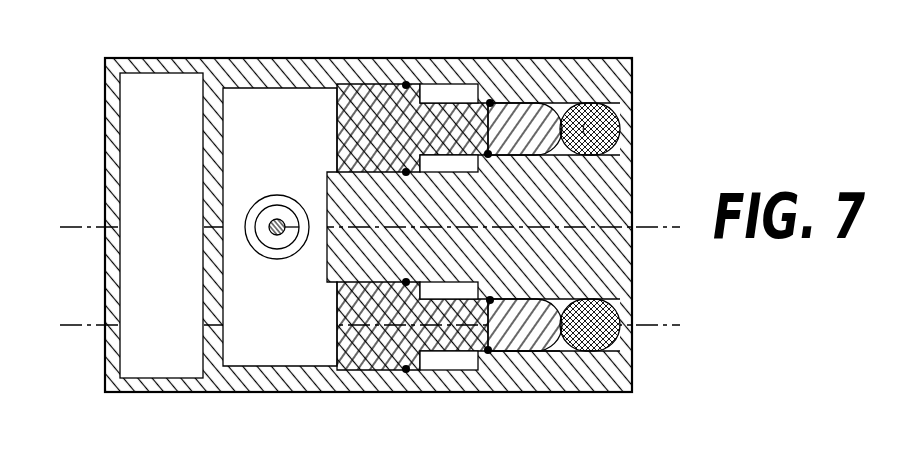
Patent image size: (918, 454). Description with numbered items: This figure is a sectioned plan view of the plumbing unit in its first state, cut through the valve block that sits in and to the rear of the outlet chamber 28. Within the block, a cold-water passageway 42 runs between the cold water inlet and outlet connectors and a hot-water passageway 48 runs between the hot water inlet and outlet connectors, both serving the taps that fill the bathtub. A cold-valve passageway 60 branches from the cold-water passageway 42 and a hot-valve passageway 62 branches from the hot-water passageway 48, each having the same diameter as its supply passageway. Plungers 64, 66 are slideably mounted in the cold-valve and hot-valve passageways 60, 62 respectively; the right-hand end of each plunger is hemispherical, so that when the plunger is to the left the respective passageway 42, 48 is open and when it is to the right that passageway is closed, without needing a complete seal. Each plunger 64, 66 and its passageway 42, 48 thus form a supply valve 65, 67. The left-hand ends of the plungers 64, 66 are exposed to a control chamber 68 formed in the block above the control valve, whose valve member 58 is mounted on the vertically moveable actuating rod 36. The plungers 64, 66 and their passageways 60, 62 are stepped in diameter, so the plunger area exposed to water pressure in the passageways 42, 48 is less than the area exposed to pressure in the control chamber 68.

The outlet chamber 28 is at (137, 180).
The actuating rod 36 is at (267, 220).
The valve member 58 is at (270, 255).
The control chamber 68 is at (296, 108).
The plunger 66 is at (517, 105).
The cold-valve passageway 60 is at (578, 292).
The hot-valve passageway 62 is at (570, 100).
The supply valve 65 is at (585, 318).
The hot-water passageway 48 is at (615, 115).
The cold-water passageway 42 is at (613, 347).
The supply valve 67 is at (580, 133).
The plunger 64 is at (528, 352).